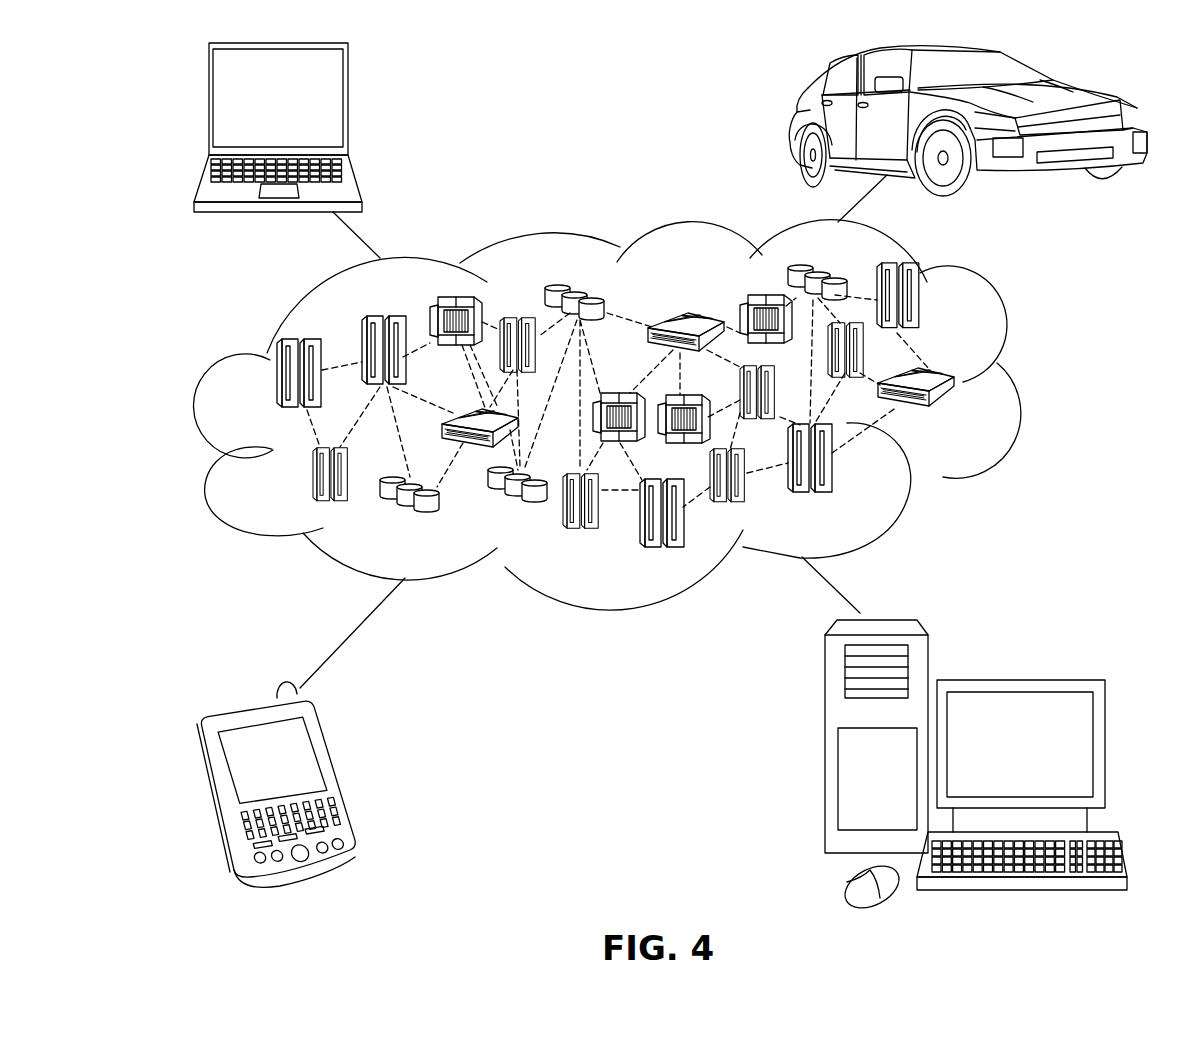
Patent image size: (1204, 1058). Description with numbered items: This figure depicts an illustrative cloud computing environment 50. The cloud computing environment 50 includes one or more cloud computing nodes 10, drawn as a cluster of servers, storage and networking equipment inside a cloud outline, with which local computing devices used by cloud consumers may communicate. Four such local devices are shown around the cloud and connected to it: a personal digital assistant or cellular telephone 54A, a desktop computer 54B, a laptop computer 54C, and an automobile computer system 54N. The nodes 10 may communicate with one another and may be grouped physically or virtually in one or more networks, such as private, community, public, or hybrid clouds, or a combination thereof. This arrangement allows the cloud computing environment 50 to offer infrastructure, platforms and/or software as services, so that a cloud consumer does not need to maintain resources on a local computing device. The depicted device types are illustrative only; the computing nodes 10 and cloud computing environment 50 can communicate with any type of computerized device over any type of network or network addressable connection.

The laptop computer 54C is at (348, 107).
The automobile computer system 54N is at (797, 122).
The personal digital assistant (PDA) or cellular telephone 54A is at (338, 773).
The desktop computer 54B is at (1018, 678).
The cloud computing environment 50 is at (1017, 383).
The cloud computing node 10 is at (964, 418).